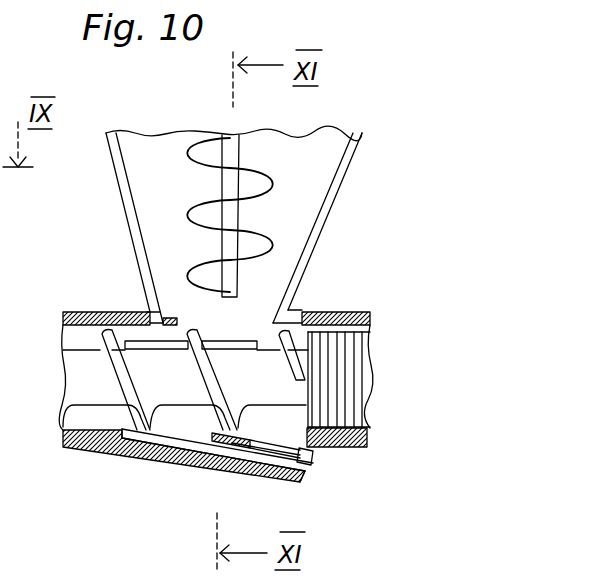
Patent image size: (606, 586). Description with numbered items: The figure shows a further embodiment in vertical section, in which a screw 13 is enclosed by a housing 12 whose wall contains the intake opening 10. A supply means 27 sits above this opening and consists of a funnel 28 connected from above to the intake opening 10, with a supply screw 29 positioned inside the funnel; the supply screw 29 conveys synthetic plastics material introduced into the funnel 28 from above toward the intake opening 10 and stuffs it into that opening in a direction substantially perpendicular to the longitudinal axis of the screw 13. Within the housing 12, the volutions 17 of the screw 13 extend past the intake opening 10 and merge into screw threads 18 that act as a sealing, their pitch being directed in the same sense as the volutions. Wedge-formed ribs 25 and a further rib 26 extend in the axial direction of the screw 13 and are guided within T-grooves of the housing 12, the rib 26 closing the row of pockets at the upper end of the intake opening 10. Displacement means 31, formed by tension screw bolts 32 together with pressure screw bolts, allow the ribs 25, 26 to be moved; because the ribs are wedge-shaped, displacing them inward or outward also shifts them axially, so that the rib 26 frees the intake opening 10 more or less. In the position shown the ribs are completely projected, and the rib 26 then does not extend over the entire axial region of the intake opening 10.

The intake opening 10 is at (238, 337).
The housing 12 is at (86, 312).
The screw 13 is at (78, 382).
The volutions 17 is at (128, 378).
The sealing threads 18 is at (342, 314).
The ribs 25 is at (188, 437).
The rib 26 is at (135, 341).
The supply means 27 is at (302, 222).
The funnel 28 is at (128, 178).
The supply screw 29 is at (253, 174).
The displacement means 31 is at (319, 467).
The tension screw bolts 32 is at (277, 448).